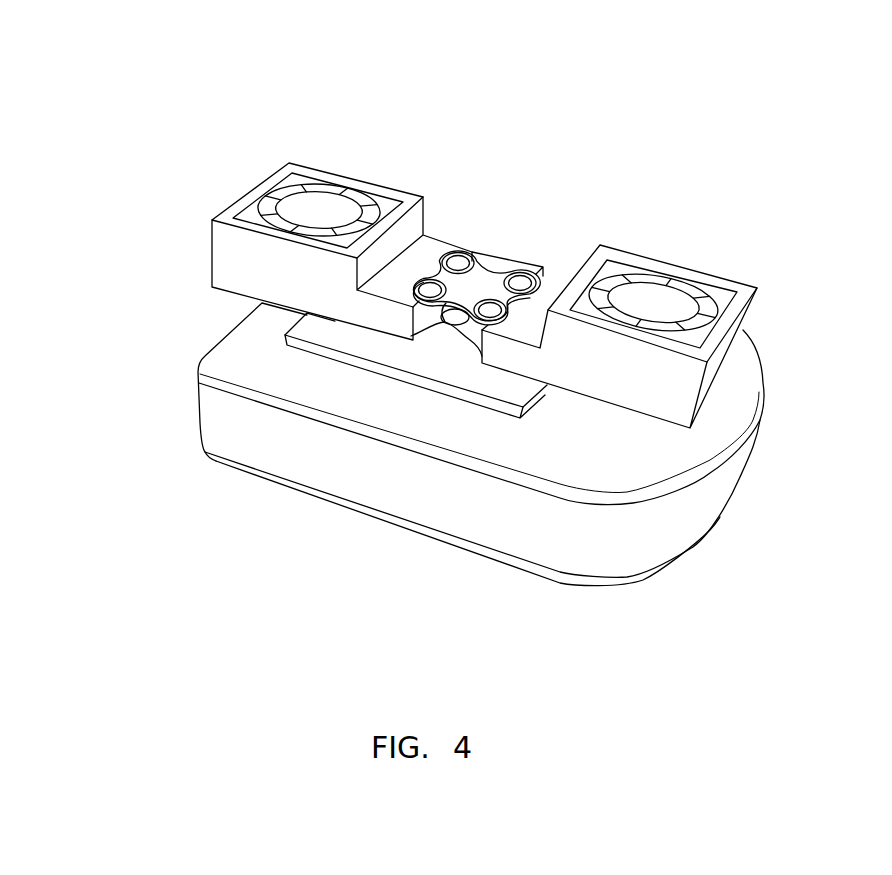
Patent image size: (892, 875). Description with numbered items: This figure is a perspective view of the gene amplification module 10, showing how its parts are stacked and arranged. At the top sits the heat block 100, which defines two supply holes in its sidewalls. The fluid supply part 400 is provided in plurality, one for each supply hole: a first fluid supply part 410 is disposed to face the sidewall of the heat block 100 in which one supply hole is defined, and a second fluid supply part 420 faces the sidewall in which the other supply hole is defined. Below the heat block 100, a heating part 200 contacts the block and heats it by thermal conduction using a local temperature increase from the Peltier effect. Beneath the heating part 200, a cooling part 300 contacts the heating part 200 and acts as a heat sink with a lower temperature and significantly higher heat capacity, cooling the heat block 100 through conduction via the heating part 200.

The gene amplification module 10 is at (335, 78).
The heat block 100 is at (491, 286).
The heating part 200 is at (505, 393).
The cooling part 300 is at (435, 510).
The fluid supply part 400 is at (98, 353).
The first fluid supply part 410 is at (232, 252).
The second fluid supply part 420 is at (682, 390).